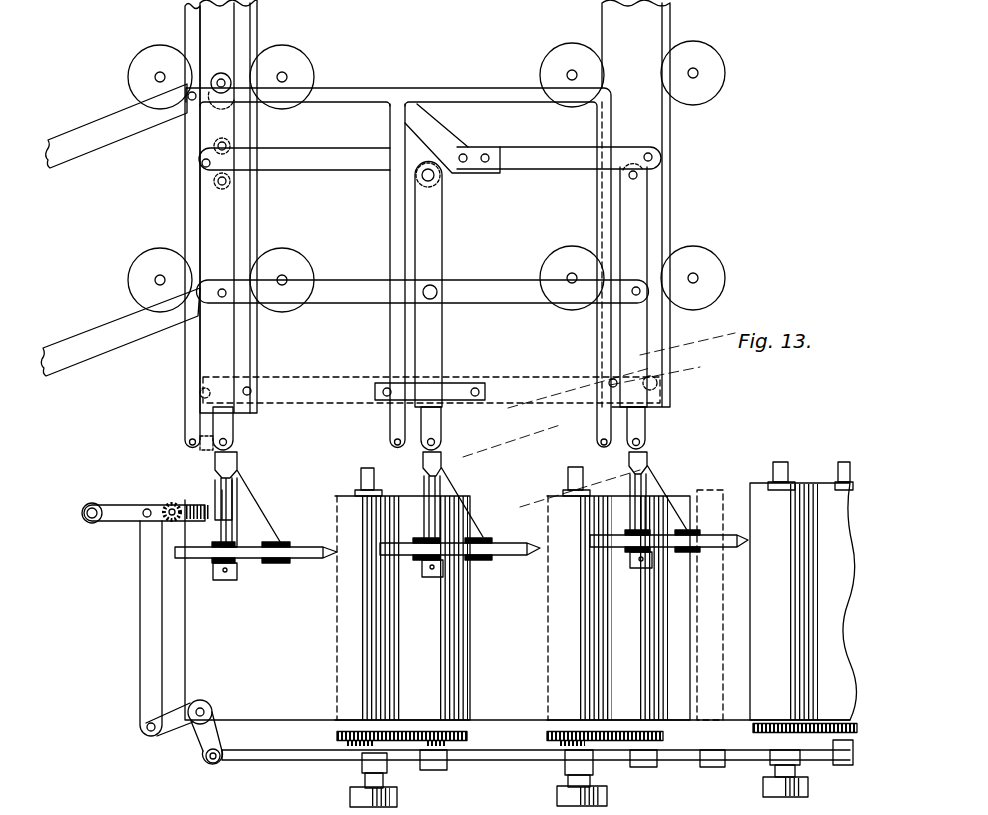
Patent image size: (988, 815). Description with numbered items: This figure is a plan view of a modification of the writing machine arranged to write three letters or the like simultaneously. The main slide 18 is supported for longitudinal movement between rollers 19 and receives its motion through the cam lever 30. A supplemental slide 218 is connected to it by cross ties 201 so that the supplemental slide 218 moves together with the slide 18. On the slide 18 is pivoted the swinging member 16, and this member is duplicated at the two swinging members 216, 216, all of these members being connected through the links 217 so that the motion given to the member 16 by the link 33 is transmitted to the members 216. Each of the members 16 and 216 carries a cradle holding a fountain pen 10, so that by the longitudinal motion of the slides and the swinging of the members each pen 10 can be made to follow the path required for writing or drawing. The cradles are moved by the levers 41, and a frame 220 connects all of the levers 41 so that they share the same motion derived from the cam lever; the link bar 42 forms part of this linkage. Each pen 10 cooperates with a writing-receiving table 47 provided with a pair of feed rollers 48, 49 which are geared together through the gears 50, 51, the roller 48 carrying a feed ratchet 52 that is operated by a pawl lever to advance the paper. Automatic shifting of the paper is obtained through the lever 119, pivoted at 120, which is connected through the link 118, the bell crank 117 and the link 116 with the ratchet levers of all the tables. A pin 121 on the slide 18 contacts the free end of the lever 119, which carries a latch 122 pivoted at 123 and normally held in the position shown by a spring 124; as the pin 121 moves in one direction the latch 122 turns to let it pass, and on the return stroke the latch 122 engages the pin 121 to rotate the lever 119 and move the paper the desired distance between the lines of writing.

The fountain pen 10 is at (297, 560).
The swinging member 16 is at (228, 243).
The slide 18 is at (248, 41).
The rollers 19 is at (128, 73).
The cam lever 30 is at (101, 140).
The link 33 is at (103, 330).
The levers 41 is at (205, 440).
The link bar 42 is at (188, 37).
The table 47 is at (250, 705).
The feed roller 48 is at (760, 493).
The feed roller 49 is at (827, 492).
The gear 50 is at (468, 740).
The gear 51 is at (340, 735).
The feed ratchet 52 is at (352, 748).
The link 116 is at (315, 762).
The bell crank 117 is at (200, 752).
The link 118 is at (148, 663).
The lever 119 is at (114, 509).
The pivot 120 is at (89, 524).
The pin 121 is at (205, 394).
The latch 122 is at (208, 508).
The pivot 123 is at (170, 507).
The spring 124 is at (178, 504).
The cross ties 201 is at (556, 141).
The swinging members 216 is at (437, 245).
The links 217 is at (340, 284).
The supplemental slide 218 is at (657, 29).
The frame 220 is at (462, 95).